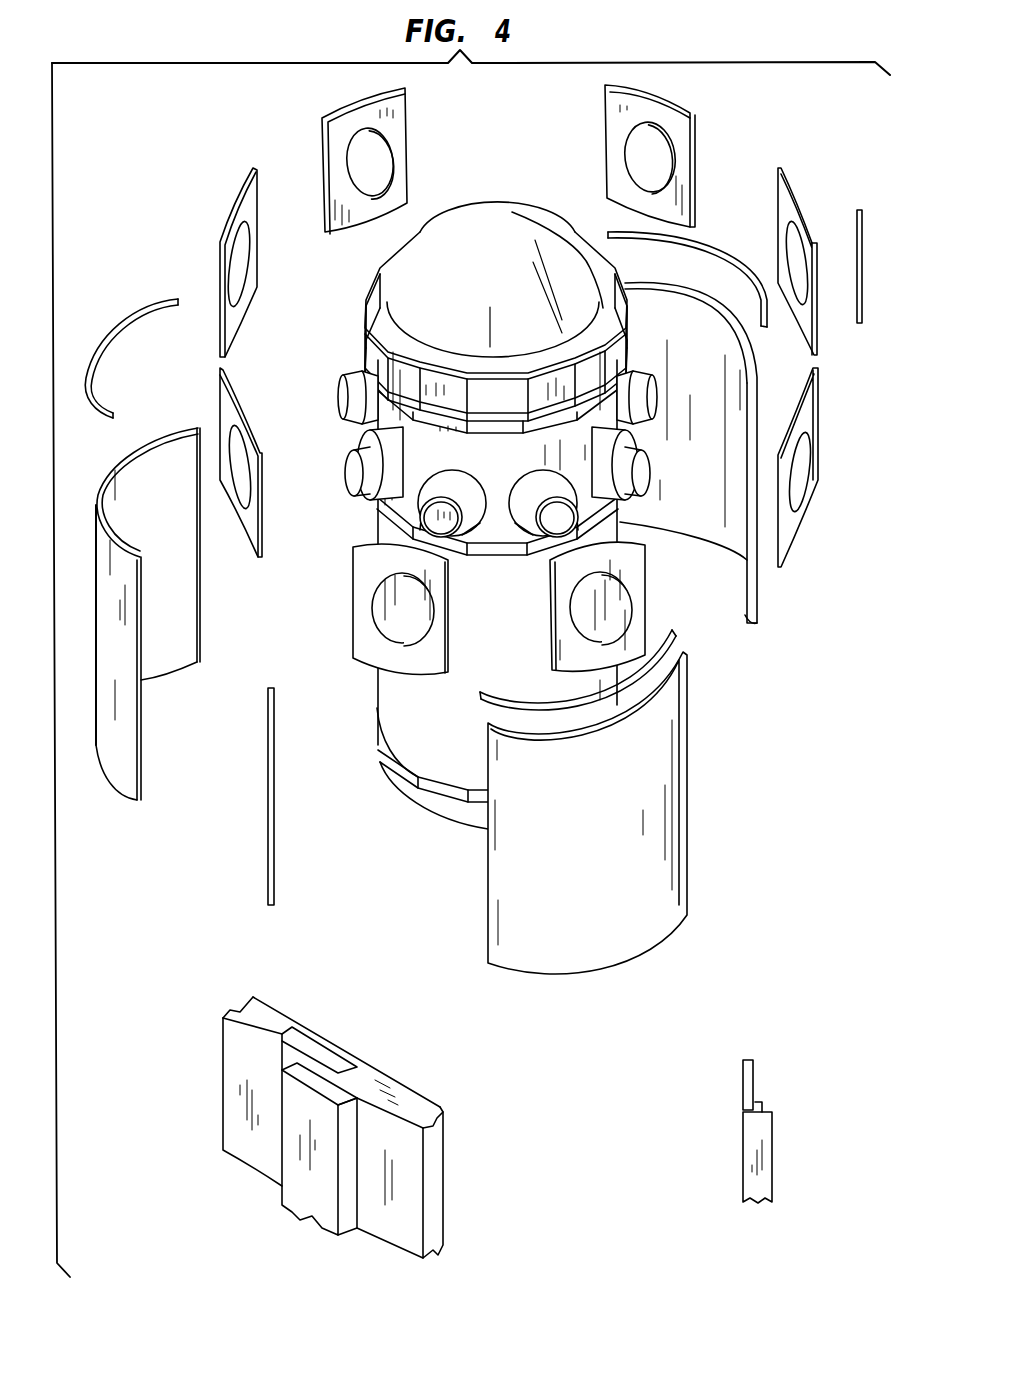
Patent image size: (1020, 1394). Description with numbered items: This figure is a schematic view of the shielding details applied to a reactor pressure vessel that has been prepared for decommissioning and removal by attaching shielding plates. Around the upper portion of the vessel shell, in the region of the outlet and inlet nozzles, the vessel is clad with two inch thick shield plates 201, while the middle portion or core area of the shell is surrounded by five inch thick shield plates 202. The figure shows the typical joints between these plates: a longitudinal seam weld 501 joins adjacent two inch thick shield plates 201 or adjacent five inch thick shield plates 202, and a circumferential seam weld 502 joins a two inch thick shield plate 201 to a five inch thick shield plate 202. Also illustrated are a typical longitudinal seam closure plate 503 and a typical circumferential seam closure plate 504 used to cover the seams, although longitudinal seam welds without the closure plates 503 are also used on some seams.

The two inch thick shield plate 201 is at (322, 152).
The five inch thick shield plate 202 is at (688, 783).
The longitudinal seam weld 501 is at (274, 1008).
The circumferential seam weld 502 is at (742, 1086).
The longitudinal seam closure plate 503 is at (268, 798).
The circumferential seam closure plate 504 is at (133, 310).